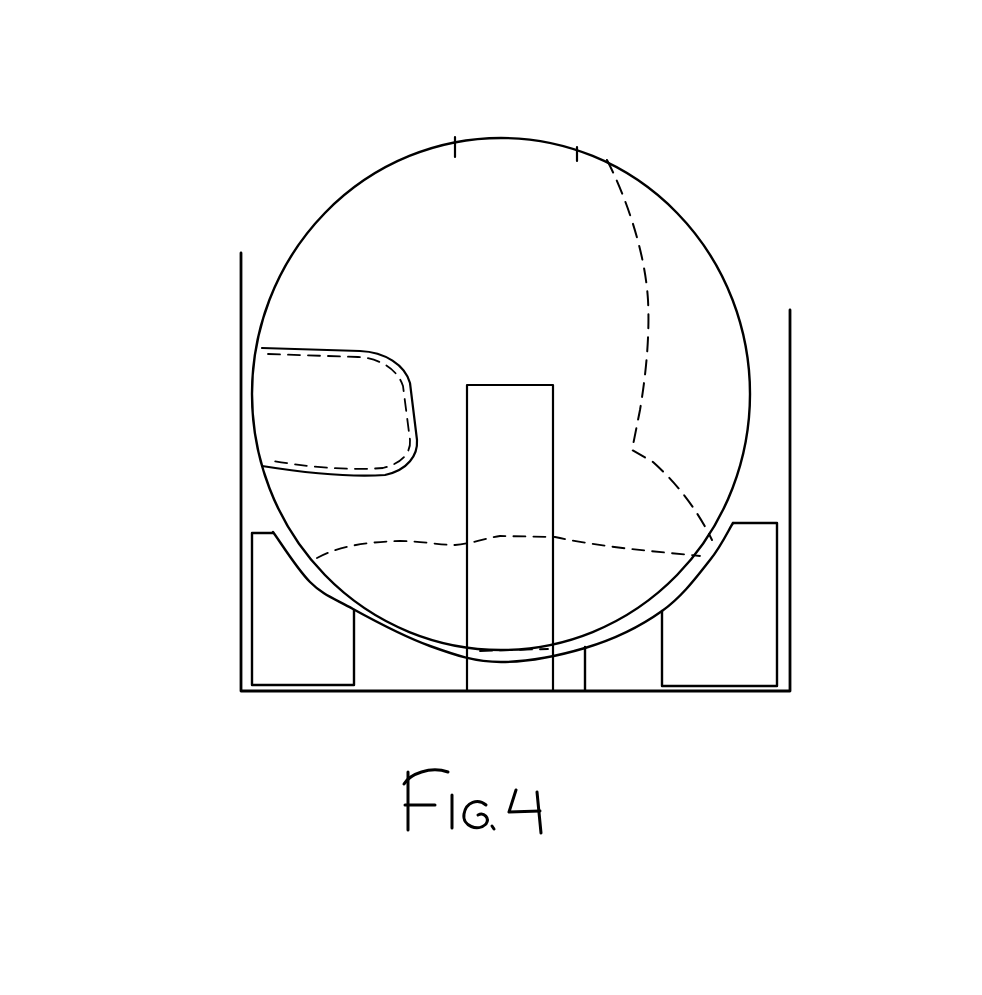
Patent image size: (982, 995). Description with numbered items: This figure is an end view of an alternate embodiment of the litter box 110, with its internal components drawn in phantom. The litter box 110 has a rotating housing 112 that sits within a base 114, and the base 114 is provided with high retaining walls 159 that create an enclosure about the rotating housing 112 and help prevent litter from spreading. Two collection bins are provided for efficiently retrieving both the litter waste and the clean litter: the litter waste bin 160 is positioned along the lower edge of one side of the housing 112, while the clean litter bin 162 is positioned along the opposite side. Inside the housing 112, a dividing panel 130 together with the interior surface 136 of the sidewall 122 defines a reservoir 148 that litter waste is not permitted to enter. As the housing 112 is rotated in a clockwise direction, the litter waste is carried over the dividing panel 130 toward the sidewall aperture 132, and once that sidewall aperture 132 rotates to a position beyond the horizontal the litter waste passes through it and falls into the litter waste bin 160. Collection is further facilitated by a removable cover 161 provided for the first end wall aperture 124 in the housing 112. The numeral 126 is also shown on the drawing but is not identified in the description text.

The litter box 110 is at (298, 120).
The housing 112 is at (601, 161).
The base 114 is at (240, 535).
The sidewall 122 is at (287, 265).
The first end wall aperture 124 is at (277, 430).
The lower edge of opening 126 is at (672, 482).
The dividing panel 130 is at (654, 295).
The sidewall aperture 132 is at (467, 140).
The interior surface 136 is at (750, 395).
The reservoir 148 is at (722, 361).
The retaining walls 159 is at (240, 393).
The litter waste bin 160 is at (755, 657).
The removable cover 161 is at (260, 347).
The clean litter bin 162 is at (263, 642).